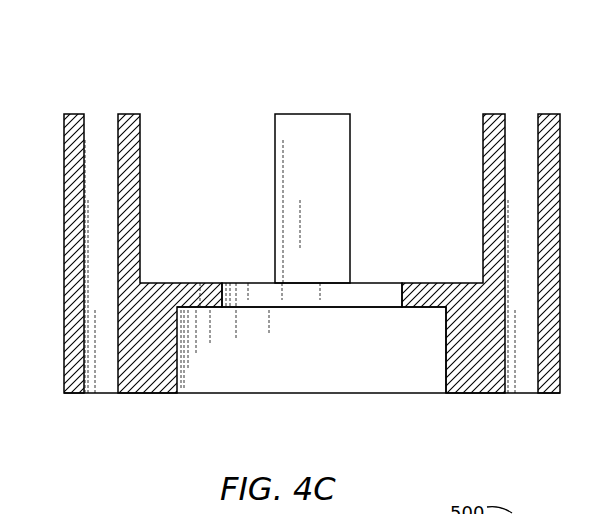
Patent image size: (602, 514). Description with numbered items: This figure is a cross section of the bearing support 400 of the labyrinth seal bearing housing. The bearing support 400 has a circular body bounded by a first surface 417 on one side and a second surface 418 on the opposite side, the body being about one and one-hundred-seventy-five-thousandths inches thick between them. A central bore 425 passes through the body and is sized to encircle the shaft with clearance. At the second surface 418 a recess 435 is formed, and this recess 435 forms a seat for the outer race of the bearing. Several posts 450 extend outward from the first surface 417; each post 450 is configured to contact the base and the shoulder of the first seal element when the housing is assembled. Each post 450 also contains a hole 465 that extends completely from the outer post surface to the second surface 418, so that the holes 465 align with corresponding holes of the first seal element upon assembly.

The bearing support 400 is at (97, 43).
The first surface 417 is at (447, 283).
The second surface 418 is at (484, 393).
The central bore 425 is at (224, 290).
The recess 435 is at (197, 328).
The post 450 is at (127, 114).
The hole 465 is at (105, 128).